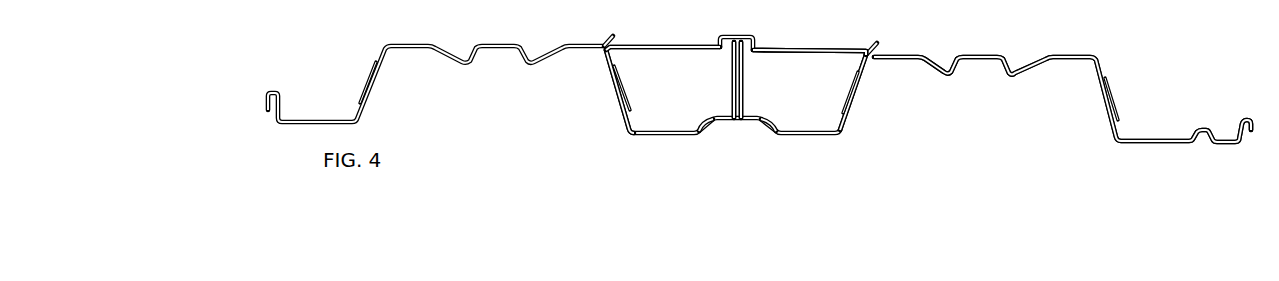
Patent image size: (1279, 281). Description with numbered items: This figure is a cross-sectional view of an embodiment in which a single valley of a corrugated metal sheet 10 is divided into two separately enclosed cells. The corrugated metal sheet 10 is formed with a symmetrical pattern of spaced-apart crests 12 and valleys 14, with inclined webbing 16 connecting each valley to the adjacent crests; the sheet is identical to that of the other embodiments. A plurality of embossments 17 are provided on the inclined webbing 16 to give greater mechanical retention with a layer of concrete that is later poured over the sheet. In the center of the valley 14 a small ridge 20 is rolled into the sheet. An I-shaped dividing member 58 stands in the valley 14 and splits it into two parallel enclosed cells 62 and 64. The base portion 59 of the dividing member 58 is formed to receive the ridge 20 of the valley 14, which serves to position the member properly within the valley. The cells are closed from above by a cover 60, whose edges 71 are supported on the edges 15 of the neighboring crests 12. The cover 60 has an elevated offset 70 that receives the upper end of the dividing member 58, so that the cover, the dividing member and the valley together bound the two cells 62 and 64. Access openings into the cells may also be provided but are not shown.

The corrugated metal sheet 10 is at (1122, 84).
The crest 12 is at (895, 52).
The valley 14 is at (835, 140).
The edge of crest 15 is at (604, 56).
The inclined webbing 16 is at (622, 98).
The embossment 17 is at (636, 68).
The ridge 20 is at (731, 126).
The I-shaped dividing member 58 is at (744, 67).
The base portion 59 is at (698, 132).
The cover 60 is at (788, 43).
The enclosed cell 62 is at (694, 100).
The enclosed cell 64 is at (812, 100).
The elevated offset 70 is at (731, 38).
The edge of cover 71 is at (604, 42).